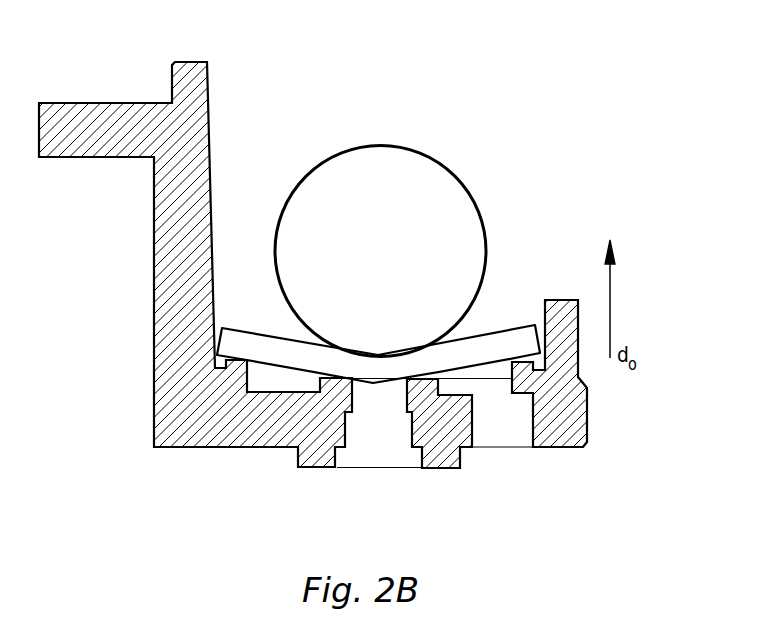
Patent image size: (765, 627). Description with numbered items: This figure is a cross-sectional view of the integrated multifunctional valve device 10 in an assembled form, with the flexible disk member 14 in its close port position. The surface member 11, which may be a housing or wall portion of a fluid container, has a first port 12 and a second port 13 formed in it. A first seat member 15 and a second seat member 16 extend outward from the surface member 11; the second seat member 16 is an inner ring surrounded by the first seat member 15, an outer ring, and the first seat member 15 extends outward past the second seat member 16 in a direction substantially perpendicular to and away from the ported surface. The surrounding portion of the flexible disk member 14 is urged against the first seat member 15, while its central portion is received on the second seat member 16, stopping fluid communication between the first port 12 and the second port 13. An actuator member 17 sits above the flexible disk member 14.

The sensor assembly 10 is at (392, 30).
The housing body 11 is at (257, 486).
The support member 12 is at (499, 437).
The central pedestal 13 is at (386, 458).
The flexure plate 14 is at (482, 337).
The pocket gap 15 is at (525, 368).
The slot 16 is at (338, 384).
The ball 17 is at (470, 192).